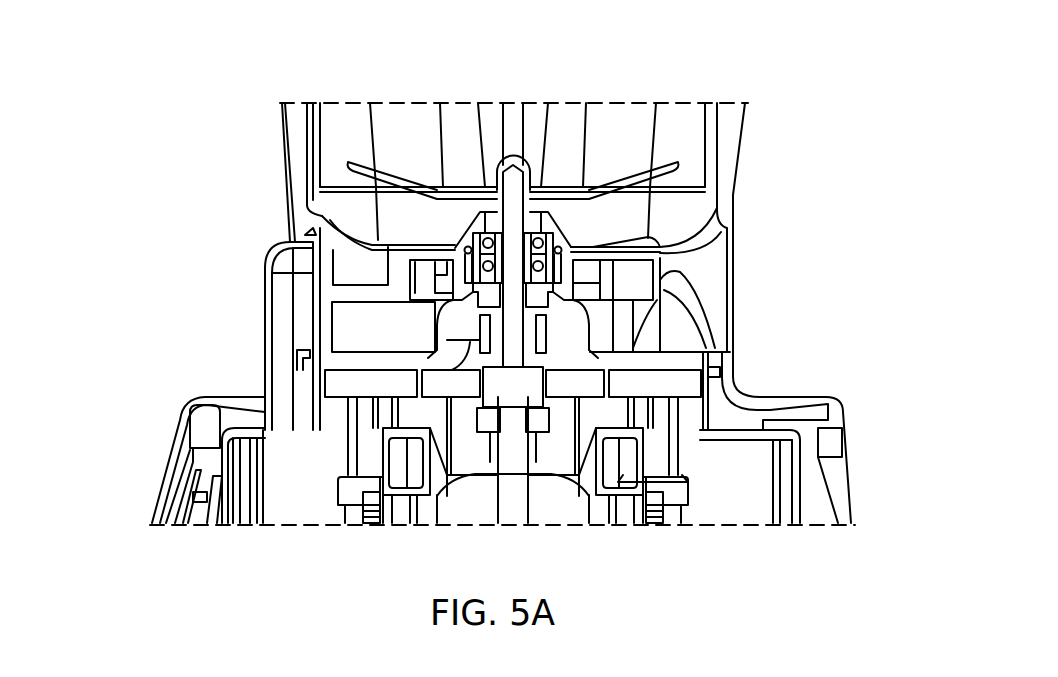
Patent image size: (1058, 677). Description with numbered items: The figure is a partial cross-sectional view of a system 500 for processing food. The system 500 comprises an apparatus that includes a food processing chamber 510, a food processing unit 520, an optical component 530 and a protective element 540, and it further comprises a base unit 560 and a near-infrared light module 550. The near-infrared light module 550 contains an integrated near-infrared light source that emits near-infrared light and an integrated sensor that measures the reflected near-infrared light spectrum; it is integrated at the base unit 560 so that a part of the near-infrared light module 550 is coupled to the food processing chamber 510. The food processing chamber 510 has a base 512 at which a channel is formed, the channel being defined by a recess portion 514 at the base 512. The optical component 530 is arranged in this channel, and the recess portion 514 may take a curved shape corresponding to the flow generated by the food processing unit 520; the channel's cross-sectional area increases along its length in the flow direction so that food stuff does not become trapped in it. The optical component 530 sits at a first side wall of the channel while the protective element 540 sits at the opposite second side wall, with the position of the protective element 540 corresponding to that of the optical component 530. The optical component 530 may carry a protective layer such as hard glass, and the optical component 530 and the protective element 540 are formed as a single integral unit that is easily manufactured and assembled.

The system 500 is at (842, 172).
The food processing chamber 510 is at (730, 295).
The base 512 is at (430, 255).
The recess portion 514 is at (372, 255).
The food processing unit 520 is at (565, 200).
The optical component 530 is at (405, 283).
The protective element 540 is at (388, 260).
The near-infrared light module 550 is at (287, 303).
The base unit 560 is at (205, 462).